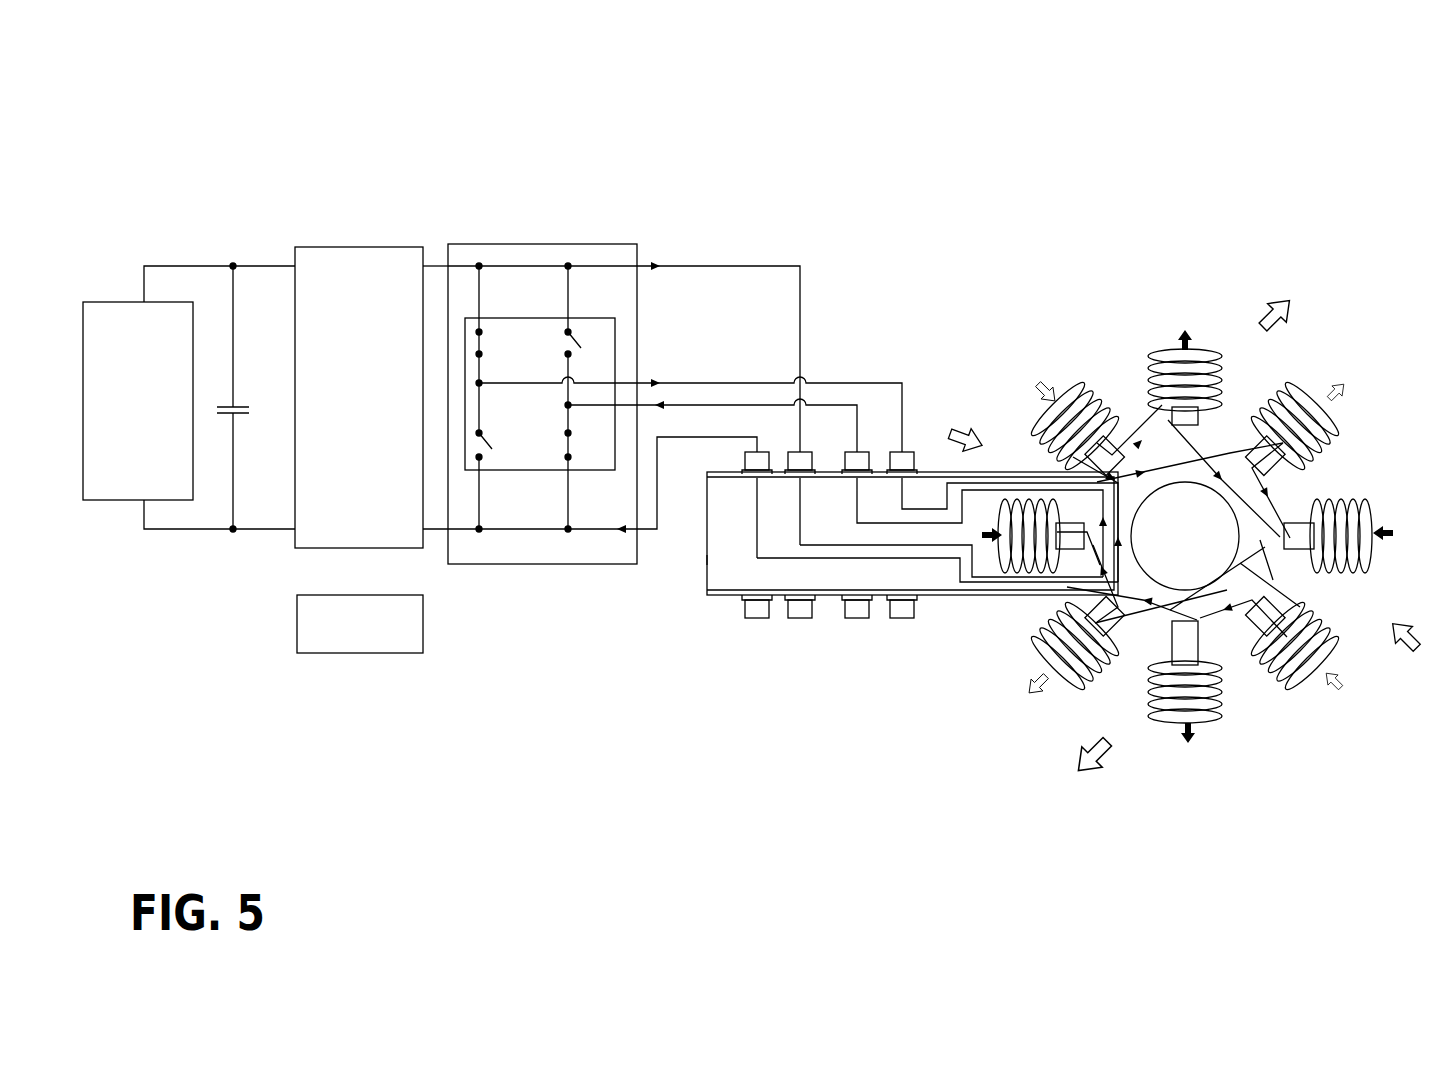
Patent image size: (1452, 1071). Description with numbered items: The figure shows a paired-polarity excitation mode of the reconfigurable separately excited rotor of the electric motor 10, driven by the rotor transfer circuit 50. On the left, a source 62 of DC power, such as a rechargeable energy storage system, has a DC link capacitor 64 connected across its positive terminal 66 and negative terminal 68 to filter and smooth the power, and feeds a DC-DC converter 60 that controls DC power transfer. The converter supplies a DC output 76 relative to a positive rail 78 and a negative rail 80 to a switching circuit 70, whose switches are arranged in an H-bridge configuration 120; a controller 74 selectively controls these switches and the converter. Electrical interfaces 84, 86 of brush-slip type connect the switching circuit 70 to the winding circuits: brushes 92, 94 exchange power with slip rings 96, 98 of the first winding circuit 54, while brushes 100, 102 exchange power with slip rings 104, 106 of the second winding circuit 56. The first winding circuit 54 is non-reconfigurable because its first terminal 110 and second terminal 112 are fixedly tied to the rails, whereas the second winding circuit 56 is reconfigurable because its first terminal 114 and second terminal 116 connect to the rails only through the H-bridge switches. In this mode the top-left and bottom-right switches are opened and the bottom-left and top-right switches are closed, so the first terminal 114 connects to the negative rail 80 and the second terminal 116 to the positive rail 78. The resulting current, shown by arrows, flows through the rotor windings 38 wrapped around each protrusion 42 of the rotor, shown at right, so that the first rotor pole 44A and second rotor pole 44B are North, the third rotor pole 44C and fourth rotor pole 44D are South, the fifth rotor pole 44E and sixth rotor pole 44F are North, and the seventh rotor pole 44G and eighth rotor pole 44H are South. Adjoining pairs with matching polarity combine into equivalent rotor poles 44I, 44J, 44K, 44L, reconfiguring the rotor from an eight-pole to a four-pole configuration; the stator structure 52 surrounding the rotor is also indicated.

The electric motor 10 is at (1046, 68).
The rotor windings 38 is at (1006, 528).
The protrusion 42 is at (1052, 568).
The first rotor pole 44A is at (1178, 342).
The second rotor pole 44B is at (1332, 385).
The third rotor pole 44C is at (1393, 532).
The fourth rotor pole 44D is at (1340, 688).
The fifth rotor pole 44E is at (1200, 735).
The sixth rotor pole 44F is at (1043, 688).
The seventh rotor pole 44G is at (985, 553).
The eighth rotor pole 44H is at (1046, 382).
The equivalent rotor pole 44I is at (1268, 300).
The equivalent rotor pole 44J is at (1400, 652).
The equivalent rotor pole 44K is at (1100, 780).
The equivalent rotor pole 44L is at (983, 422).
The rotor transfer circuit 50 is at (785, 159).
The stator winding 52 is at (1253, 521).
The first winding circuit 54 is at (840, 560).
The second winding circuit 56 is at (773, 434).
The DC-DC converter 60 is at (359, 397).
The source 62 is at (138, 401).
The DC link capacitor 64 is at (236, 413).
The positive terminal 66 is at (142, 300).
The negative terminal 68 is at (142, 500).
The switching circuit 70 is at (545, 243).
The controller 74 is at (360, 624).
The DC output 76 is at (539, 212).
The positive rail 78 is at (435, 262).
The negative rail 80 is at (430, 535).
The electrical interface 84 is at (743, 357).
The electrical interface 86 is at (721, 379).
The brush 92 is at (786, 456).
The brush 94 is at (743, 460).
The slip ring 96 is at (753, 520).
The slip ring 98 is at (752, 475).
The brush 100 is at (903, 450).
The brush 102 is at (858, 450).
The slip ring 104 is at (910, 513).
The slip ring 106 is at (951, 611).
The first terminal 110 is at (795, 545).
The second terminal 112 is at (707, 560).
The first terminal 114 is at (937, 517).
The second terminal 116 is at (873, 527).
The H-bridge configuration 120 is at (597, 318).